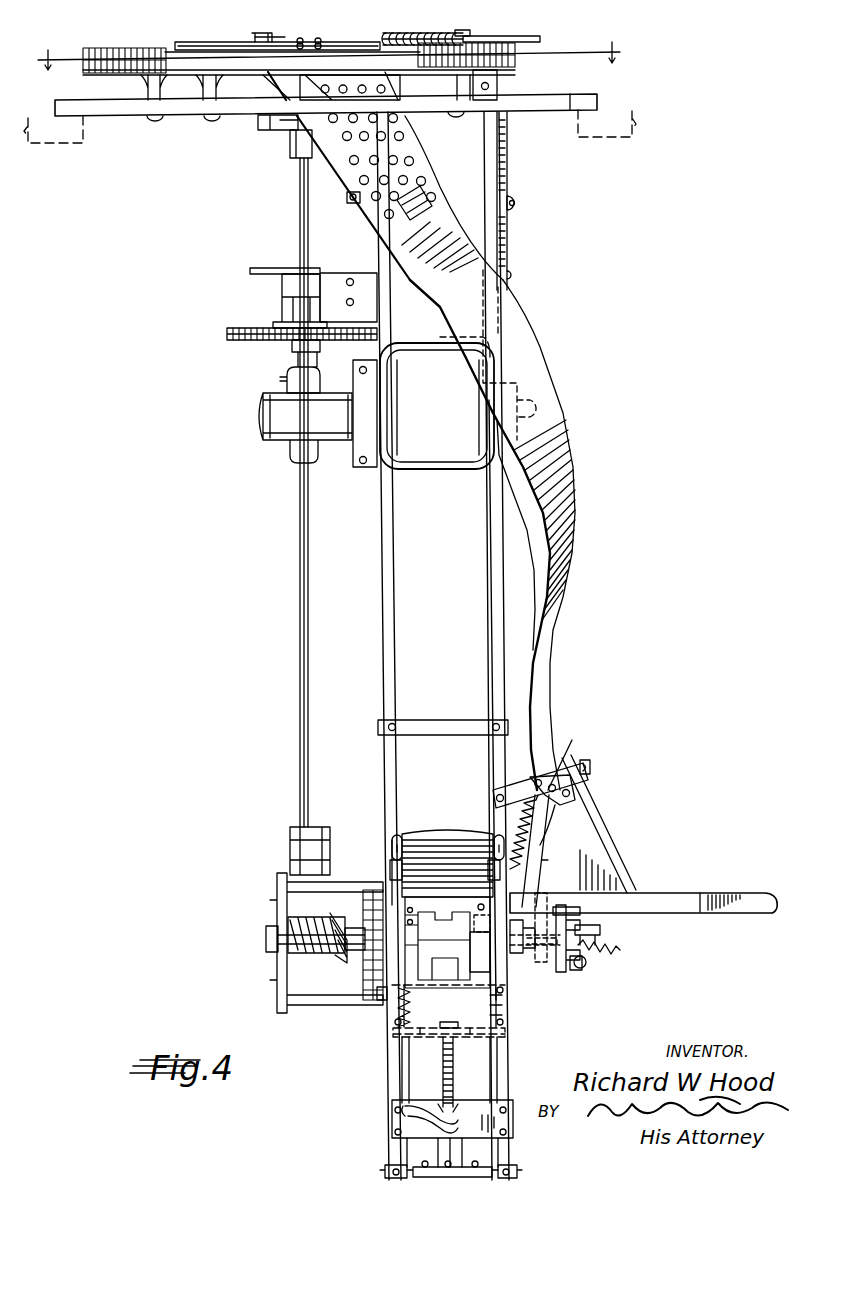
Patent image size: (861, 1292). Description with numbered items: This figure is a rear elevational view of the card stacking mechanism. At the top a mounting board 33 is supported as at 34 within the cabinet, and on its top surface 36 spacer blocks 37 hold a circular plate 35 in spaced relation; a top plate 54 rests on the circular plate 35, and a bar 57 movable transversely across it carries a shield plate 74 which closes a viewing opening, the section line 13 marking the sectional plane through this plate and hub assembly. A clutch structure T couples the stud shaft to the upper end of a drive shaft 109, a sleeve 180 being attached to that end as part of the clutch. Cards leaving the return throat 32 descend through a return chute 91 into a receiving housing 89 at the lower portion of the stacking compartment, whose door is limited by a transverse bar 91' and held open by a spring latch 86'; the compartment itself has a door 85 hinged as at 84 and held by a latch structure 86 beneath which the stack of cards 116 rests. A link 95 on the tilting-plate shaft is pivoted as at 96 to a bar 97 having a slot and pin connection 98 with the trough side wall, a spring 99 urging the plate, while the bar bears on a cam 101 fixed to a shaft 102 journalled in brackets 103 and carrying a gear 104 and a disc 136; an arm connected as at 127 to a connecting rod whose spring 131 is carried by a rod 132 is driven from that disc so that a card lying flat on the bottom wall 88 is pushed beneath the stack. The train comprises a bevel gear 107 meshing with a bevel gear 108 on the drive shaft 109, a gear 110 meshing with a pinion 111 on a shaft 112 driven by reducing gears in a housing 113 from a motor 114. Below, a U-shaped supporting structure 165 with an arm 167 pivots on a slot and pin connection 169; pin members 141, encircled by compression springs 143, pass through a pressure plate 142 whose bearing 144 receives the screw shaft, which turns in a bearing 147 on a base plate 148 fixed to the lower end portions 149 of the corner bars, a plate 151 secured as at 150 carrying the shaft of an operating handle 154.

The section line 13- 13 is at (330, 42).
The bar 57 is at (266, 42).
The shield plate 74 is at (272, 40).
The top plate 54 is at (500, 42).
The circular plate 35 is at (127, 76).
The spacer blocks 37 is at (165, 92).
The mounting board 33 is at (557, 96).
The top surface of the mounting board 36 is at (598, 98).
The support 34 is at (52, 150).
The clutch structure T is at (260, 130).
The sleeve 180 is at (292, 144).
The drive shaft 109 is at (300, 210).
The return throat 32 is at (413, 167).
The return chute 91 is at (511, 535).
The hinge 84 is at (510, 244).
The latch structure 86 is at (533, 201).
The door 85 is at (513, 278).
The brackets 103 is at (392, 1012).
The shaft 112 is at (262, 292).
The gear 110 is at (235, 345).
The pinion 111 is at (283, 344).
The housing 113 is at (282, 445).
The motor 114 is at (458, 480).
The spring 99 is at (533, 784).
The spring latch 86' is at (607, 767).
The link 95 is at (565, 762).
The pivotal connection 96 is at (562, 782).
The receiving housing 89 is at (594, 830).
The bar 97 is at (560, 857).
The slot and pin connection 98 is at (595, 892).
The slot and pin connection 169 is at (388, 847).
The arm 167 is at (388, 868).
The stack of cards 116 is at (458, 882).
The U-shaped supporting structure 165 is at (422, 832).
The bevel gear 108 is at (288, 924).
The bevel gear 107 is at (345, 957).
The gear 104 is at (368, 1005).
The disc 136 is at (560, 914).
The shaft 102 is at (527, 952).
The cam 101 is at (548, 967).
The connection 127 is at (612, 940).
The spring 131 is at (595, 952).
The rod 132 is at (588, 970).
The bottom wall 88 is at (735, 914).
The transverse bar 91' is at (665, 893).
The compression springs 143 is at (500, 988).
The pin members 141 is at (488, 999).
The bearing 144 is at (470, 1019).
The pressure plate 142 is at (416, 1042).
The plate 151 is at (478, 1120).
The securing point 150 is at (508, 1110).
The operating handle 154 is at (408, 1114).
The lower end portions of the corner bars 149 is at (514, 1148).
The base plate 148 is at (405, 1166).
The bearing 147 is at (470, 1165).